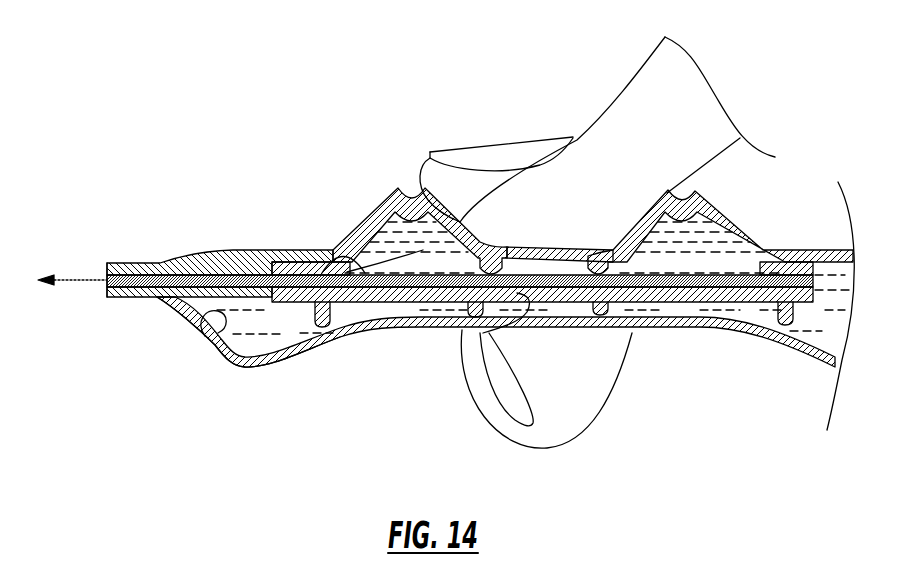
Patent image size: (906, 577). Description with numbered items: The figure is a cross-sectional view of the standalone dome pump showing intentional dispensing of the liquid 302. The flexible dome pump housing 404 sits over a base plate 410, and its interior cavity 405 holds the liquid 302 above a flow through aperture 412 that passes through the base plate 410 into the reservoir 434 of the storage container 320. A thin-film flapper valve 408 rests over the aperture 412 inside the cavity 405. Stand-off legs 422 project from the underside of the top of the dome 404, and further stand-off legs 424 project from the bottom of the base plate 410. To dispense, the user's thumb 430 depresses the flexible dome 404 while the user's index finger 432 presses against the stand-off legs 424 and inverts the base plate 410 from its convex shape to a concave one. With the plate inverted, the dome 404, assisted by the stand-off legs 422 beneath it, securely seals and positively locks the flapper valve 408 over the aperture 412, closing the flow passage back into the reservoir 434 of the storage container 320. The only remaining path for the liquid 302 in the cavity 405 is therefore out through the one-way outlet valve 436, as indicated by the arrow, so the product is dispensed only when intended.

The liquid 302 is at (393, 238).
The storage container 320 is at (220, 355).
The flexible dome pump housing 404 is at (463, 220).
The cavity 405 is at (364, 272).
The flapper valve 408 is at (545, 290).
The base plate 410 is at (370, 333).
The flow through aperture 412 is at (487, 330).
The stand-off legs 422 is at (613, 262).
The stand-off legs 424 is at (313, 333).
The thumb 430 is at (582, 162).
The index finger 432 is at (562, 418).
The reservoir 434 is at (200, 336).
The one-way outlet valve 436 is at (149, 263).